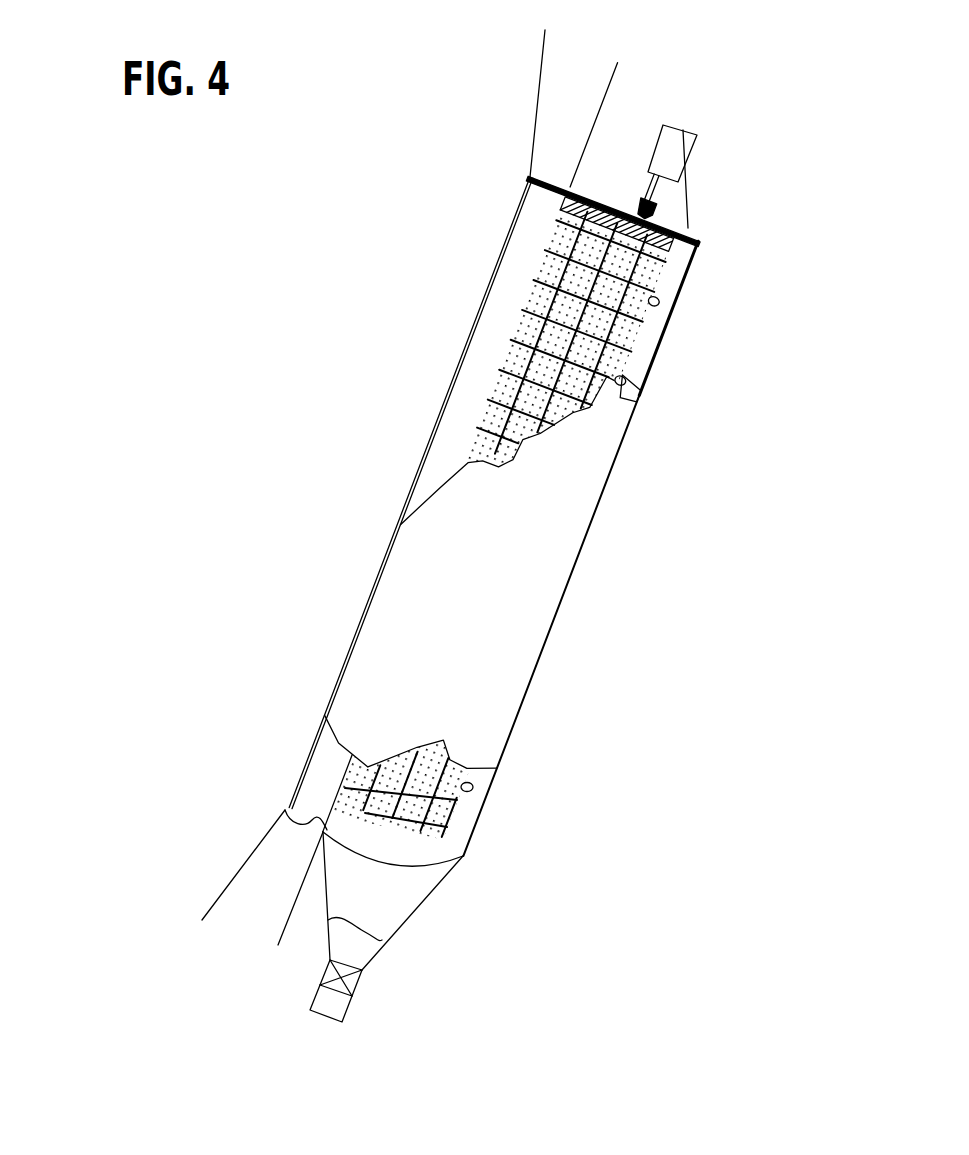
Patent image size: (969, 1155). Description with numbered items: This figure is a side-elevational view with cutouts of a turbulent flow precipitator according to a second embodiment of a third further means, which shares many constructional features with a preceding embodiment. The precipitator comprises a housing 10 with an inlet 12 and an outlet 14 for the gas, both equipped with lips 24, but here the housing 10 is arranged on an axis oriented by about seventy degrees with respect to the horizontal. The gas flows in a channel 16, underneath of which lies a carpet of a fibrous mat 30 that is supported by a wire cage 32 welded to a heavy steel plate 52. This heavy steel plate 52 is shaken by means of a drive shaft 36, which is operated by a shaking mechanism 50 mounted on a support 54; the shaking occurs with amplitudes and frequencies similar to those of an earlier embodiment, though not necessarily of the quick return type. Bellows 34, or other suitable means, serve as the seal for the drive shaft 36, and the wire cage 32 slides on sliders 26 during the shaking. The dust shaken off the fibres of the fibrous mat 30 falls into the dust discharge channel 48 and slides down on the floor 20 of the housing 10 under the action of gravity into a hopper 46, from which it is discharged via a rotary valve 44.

The housing 10 is at (405, 497).
The inlet 12 is at (471, 108).
The outlet 14 is at (177, 877).
The channel 16 is at (465, 357).
The floor 20 is at (515, 727).
The lips 24 is at (384, 524).
The sliders 26 is at (627, 542).
The fibrous mat 30 is at (467, 330).
The wire cage 32 is at (454, 339).
The bellows 34 is at (731, 205).
The drive shaft 36 is at (739, 170).
The rotary valve 44 is at (419, 991).
The hopper 46 is at (465, 940).
The dust discharge channel 48 is at (703, 318).
The shaking mechanism 50 is at (751, 135).
The heavy steel plate 52 is at (523, 198).
The support 54 is at (752, 191).